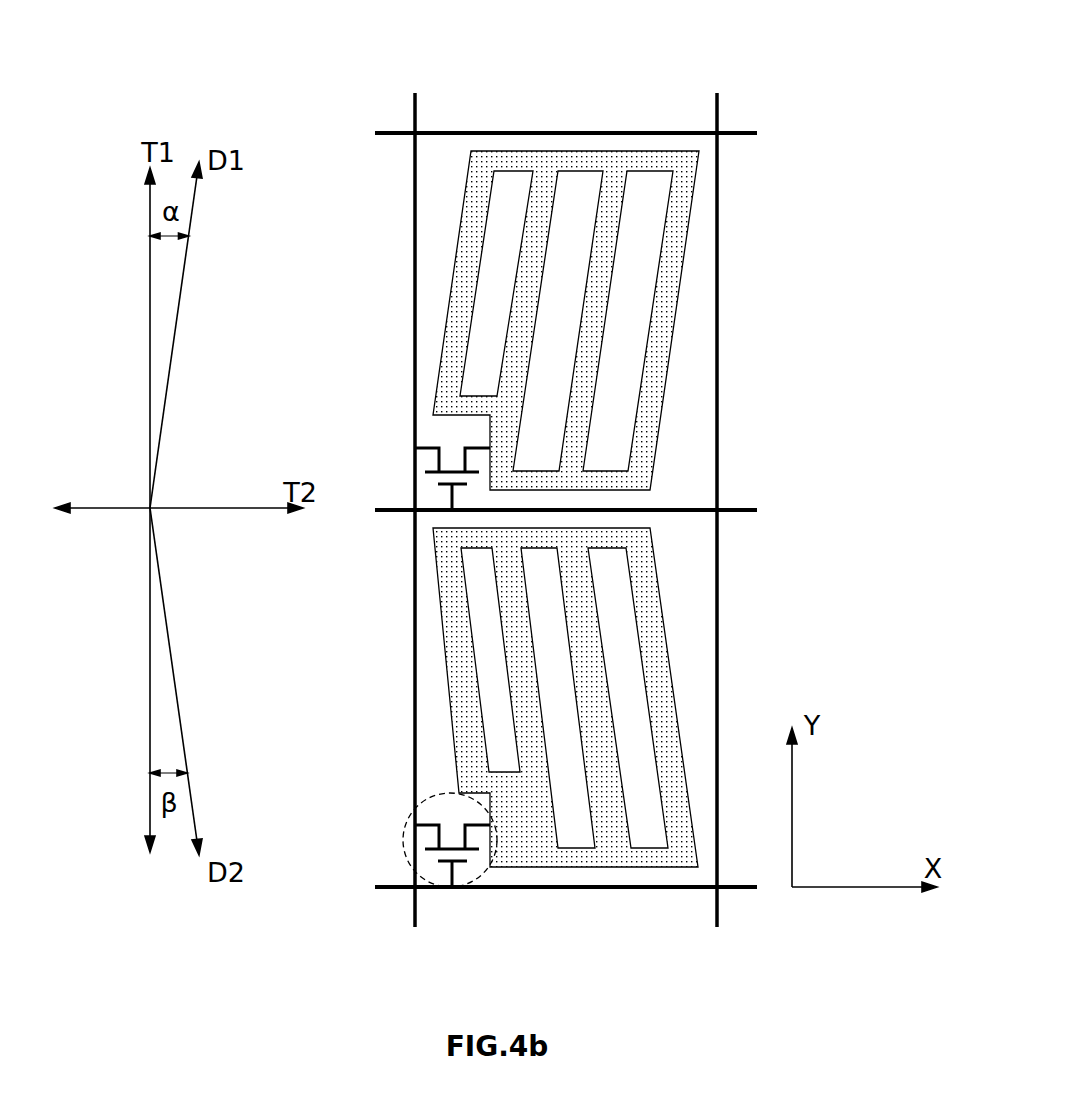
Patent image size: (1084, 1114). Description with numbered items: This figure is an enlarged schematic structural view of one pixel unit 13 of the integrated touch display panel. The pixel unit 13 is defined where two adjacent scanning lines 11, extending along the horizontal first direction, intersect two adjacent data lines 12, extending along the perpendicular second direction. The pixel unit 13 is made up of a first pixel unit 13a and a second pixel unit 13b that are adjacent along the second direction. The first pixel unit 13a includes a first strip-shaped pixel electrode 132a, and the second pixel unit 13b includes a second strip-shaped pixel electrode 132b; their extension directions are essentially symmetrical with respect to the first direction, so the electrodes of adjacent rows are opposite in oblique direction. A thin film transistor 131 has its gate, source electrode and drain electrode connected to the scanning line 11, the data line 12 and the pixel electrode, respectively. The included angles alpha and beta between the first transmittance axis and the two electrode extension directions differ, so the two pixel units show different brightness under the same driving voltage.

The scanning line 11 is at (604, 133).
The data line 12 is at (717, 333).
The pixel unit 13 is at (635, 576).
The first pixel unit 13a is at (627, 330).
The second pixel unit 13b is at (613, 760).
The thin film transistor 131 is at (481, 884).
The first strip-shaped pixel electrode 132a is at (672, 247).
The second strip-shaped pixel electrode 132b is at (655, 662).